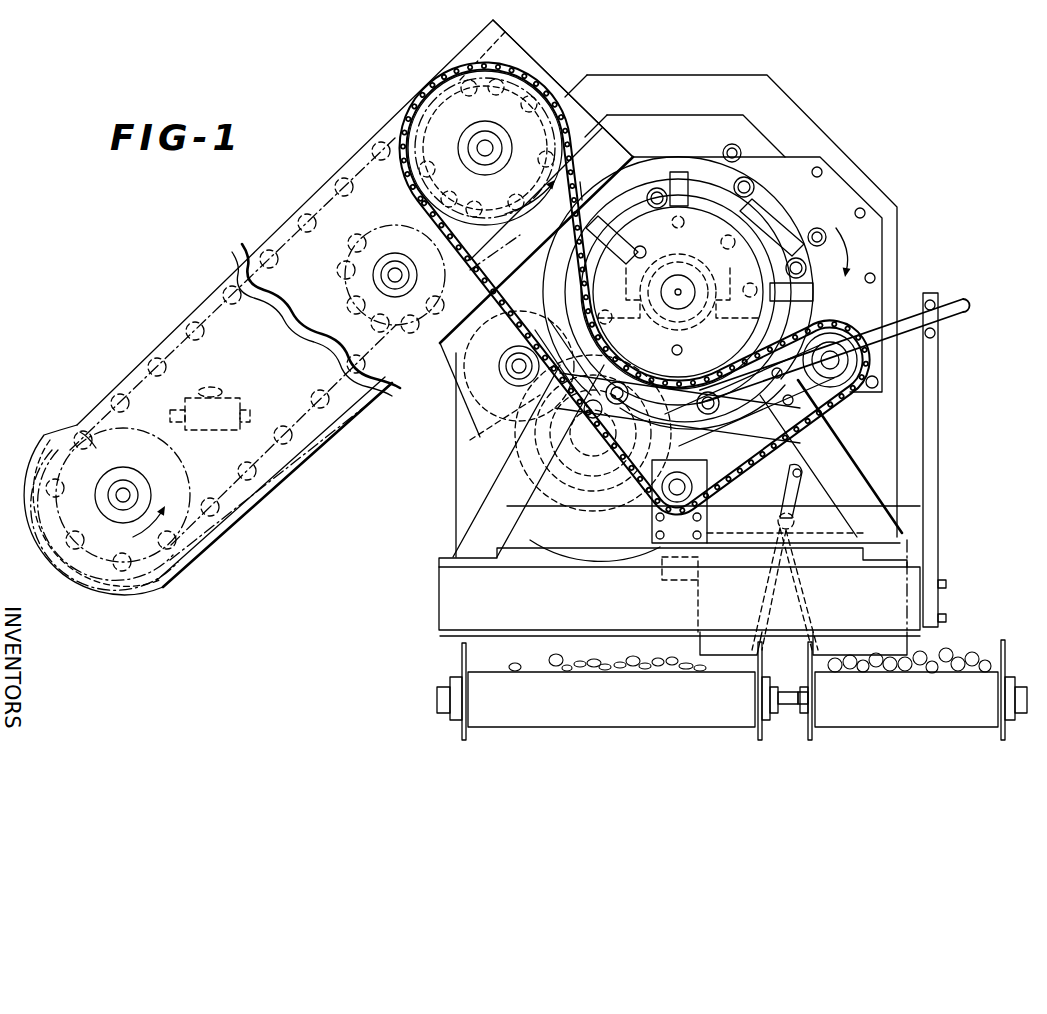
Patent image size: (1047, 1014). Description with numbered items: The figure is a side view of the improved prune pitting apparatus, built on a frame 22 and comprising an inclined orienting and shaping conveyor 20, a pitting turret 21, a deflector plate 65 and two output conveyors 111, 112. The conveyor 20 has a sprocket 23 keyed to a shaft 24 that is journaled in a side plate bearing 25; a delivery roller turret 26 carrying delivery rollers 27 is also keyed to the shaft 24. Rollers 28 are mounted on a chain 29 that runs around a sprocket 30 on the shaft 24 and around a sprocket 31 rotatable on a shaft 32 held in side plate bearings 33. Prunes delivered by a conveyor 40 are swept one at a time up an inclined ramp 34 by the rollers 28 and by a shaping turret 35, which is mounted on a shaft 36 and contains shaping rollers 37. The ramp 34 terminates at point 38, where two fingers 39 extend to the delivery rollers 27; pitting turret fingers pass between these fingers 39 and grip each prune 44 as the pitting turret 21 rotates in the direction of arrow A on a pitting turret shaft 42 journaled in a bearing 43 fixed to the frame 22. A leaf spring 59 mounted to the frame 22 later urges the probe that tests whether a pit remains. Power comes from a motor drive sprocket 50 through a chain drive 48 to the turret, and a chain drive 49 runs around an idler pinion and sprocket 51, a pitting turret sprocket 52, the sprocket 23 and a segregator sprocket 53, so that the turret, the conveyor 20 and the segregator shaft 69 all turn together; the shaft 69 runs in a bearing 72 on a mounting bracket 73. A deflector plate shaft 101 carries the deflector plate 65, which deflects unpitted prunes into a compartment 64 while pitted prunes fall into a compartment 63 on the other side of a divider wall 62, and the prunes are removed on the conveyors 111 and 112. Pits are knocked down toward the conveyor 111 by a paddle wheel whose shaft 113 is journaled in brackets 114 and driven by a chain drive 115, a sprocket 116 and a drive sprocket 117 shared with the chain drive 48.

The orienting and shaping conveyor 20 is at (258, 244).
The pitting turret 21 is at (693, 158).
The frame 22 is at (902, 267).
The sprocket 23 is at (522, 106).
The shaft 24 is at (487, 146).
The side plate bearing 25 is at (462, 157).
The delivery roller turret 26 is at (496, 41).
The delivery rollers 27 is at (500, 84).
The rollers 28 is at (340, 185).
The chain 29 is at (150, 380).
The sprocket 30 is at (462, 63).
The sprocket 31 is at (84, 434).
The shaft 32 is at (127, 488).
The side plate bearings 33 is at (101, 490).
The inclined ramp 34 is at (255, 508).
The shaping turret 35 is at (340, 268).
The shaft 36 is at (392, 280).
The shaping rollers 37 is at (365, 232).
The ramp termination point 38 is at (505, 283).
The fingers 39 is at (490, 256).
The conveyor 40 is at (238, 410).
The pitting turret shaft 42 is at (684, 283).
The bearing 43 is at (637, 290).
The prune 44 is at (212, 388).
The chain drive 48 is at (682, 434).
The chain drive 49 is at (582, 188).
The motor drive sprocket 50 is at (592, 472).
The idler pinion and sprocket 51 is at (828, 334).
The pitting turret sprocket 52 is at (662, 322).
The segregator sprocket 53 is at (702, 470).
The leaf spring 59 is at (912, 338).
The divider wall 62 is at (762, 604).
The compartment 63 is at (908, 648).
The compartment 64 is at (700, 636).
The deflector plate 65 is at (796, 458).
The segregator shaft 69 is at (700, 494).
The bearing 72 is at (706, 514).
The mounting bracket 73 is at (661, 548).
The deflector plate shaft 101 is at (792, 520).
The conveyor 111 is at (607, 722).
The conveyor 112 is at (883, 722).
The shaft 113 is at (515, 368).
The brackets 114 is at (522, 410).
The chain drive 115 is at (488, 466).
The sprocket 116 is at (470, 440).
The drive sprocket 117 is at (562, 502).
The arrow A is at (854, 253).